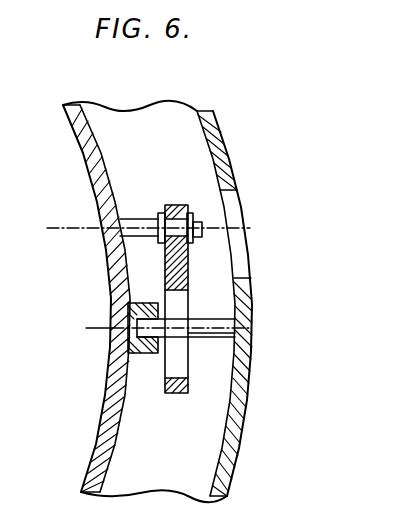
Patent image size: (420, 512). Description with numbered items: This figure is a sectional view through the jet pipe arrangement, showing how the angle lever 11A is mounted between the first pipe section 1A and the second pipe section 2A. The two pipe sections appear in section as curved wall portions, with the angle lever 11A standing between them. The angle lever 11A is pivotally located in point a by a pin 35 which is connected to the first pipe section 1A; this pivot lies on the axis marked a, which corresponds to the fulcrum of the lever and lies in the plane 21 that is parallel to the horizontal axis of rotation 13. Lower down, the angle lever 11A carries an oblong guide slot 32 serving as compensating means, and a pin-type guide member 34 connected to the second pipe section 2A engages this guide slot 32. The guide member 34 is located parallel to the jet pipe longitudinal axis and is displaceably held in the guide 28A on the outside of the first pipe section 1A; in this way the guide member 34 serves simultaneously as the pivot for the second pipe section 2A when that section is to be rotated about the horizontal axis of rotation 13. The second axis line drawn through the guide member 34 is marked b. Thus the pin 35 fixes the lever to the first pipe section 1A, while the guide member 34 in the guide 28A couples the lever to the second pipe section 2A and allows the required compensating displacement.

The first pipe section 1A is at (94, 457).
The second pipe section 2A is at (228, 463).
The angle lever 11A is at (200, 269).
The horizontal axis of rotation 13 is at (86, 328).
The plane 21 is at (60, 232).
The guide 28A is at (132, 316).
The guide slot 32 is at (172, 362).
The pin-type guide member 34 is at (210, 340).
The pin 35 is at (142, 222).
The fulcrum a is at (245, 228).
The axis b label b is at (248, 328).